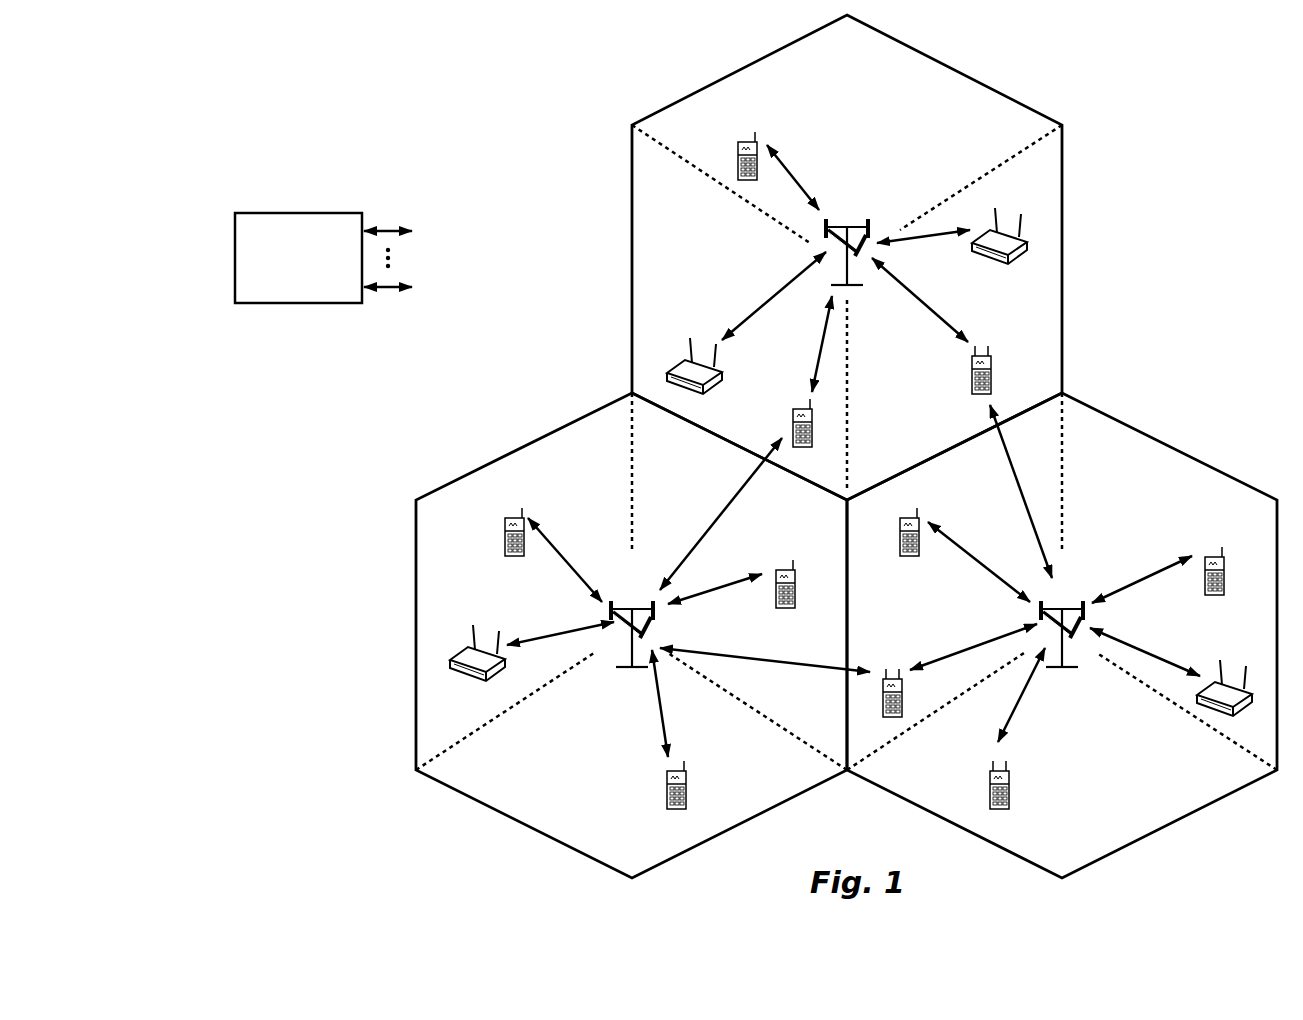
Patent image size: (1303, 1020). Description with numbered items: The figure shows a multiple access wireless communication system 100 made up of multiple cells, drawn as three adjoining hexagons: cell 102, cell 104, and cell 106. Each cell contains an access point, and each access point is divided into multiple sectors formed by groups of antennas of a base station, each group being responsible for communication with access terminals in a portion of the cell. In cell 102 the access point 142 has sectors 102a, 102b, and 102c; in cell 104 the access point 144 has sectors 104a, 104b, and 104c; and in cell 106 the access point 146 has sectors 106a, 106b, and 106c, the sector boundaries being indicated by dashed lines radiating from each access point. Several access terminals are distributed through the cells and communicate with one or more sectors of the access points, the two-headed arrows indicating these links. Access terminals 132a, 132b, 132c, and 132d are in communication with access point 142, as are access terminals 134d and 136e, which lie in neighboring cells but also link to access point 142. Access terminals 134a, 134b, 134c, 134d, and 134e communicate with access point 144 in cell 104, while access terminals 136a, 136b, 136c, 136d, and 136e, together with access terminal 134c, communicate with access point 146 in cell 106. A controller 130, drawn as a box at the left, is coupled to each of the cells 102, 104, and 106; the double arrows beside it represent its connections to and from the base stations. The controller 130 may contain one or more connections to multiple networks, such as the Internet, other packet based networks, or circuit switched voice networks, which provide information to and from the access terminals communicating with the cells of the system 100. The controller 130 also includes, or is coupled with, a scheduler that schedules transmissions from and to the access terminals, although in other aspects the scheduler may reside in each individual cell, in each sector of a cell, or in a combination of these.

The multiple access wireless communication system 100 is at (1211, 82).
The controller 130 is at (294, 213).
The cell 102 is at (520, 444).
The cell 104 is at (957, 71).
The cell 106 is at (1172, 444).
The sector 102a is at (592, 473).
The sector 102b is at (757, 711).
The sector 102c is at (505, 719).
The sector 104a is at (847, 149).
The sector 104b is at (746, 350).
The sector 104c is at (920, 425).
The sector 106a is at (935, 622).
The sector 106b is at (1117, 473).
The sector 106c is at (1183, 718).
The access point 142 is at (630, 605).
The access point 144 is at (845, 227).
The access point 146 is at (1060, 605).
The access terminal 132a is at (505, 525).
The access terminal 132b is at (795, 576).
The access terminal 132c is at (686, 776).
The access terminal 132d is at (462, 650).
The access terminal 134a is at (738, 149).
The access terminal 134b is at (1010, 236).
The access terminal 134c is at (991, 365).
The access terminal 134d is at (793, 419).
The access terminal 134e is at (683, 360).
The access terminal 136a is at (900, 526).
The access terminal 136b is at (1213, 556).
The access terminal 136c is at (1230, 685).
The access terminal 136d is at (990, 780).
The access terminal 136e is at (900, 664).